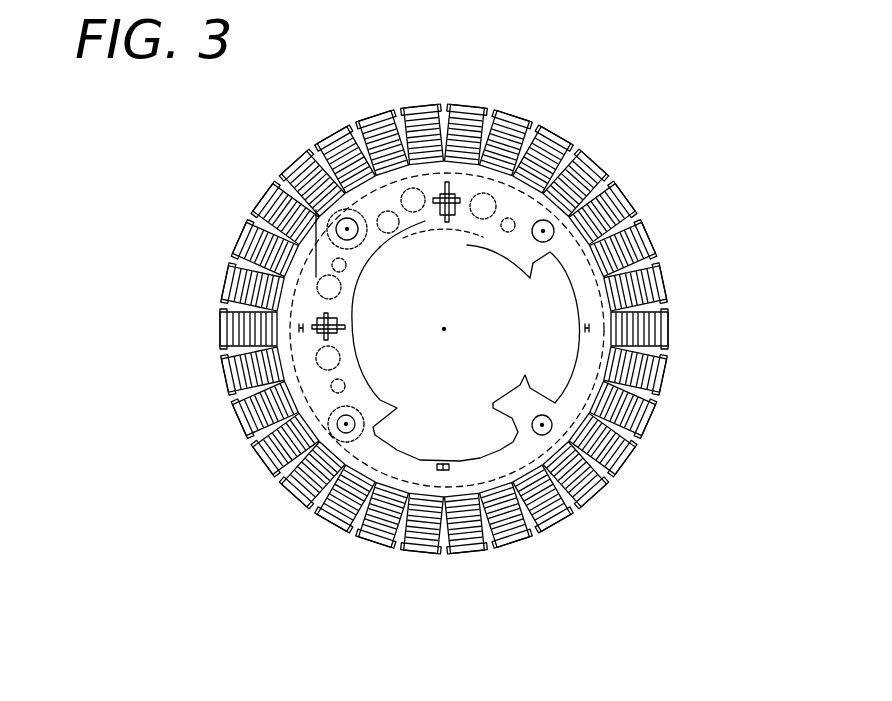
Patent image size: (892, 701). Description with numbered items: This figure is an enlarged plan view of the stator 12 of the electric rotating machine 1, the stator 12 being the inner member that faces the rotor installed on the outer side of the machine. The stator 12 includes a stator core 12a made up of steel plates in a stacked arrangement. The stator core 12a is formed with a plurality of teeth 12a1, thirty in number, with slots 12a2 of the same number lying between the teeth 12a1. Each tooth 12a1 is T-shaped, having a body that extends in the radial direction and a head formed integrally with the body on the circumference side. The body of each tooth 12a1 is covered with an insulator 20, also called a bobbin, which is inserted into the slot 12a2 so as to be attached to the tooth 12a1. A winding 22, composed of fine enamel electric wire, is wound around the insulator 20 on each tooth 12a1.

The electric rotating machine 1 is at (618, 156).
The stator 12 is at (667, 236).
The stator core 12a is at (467, 245).
The teeth 12a1 is at (240, 241).
The slots 12a2 is at (233, 350).
The insulator 20 is at (267, 187).
The winding 22 is at (655, 344).